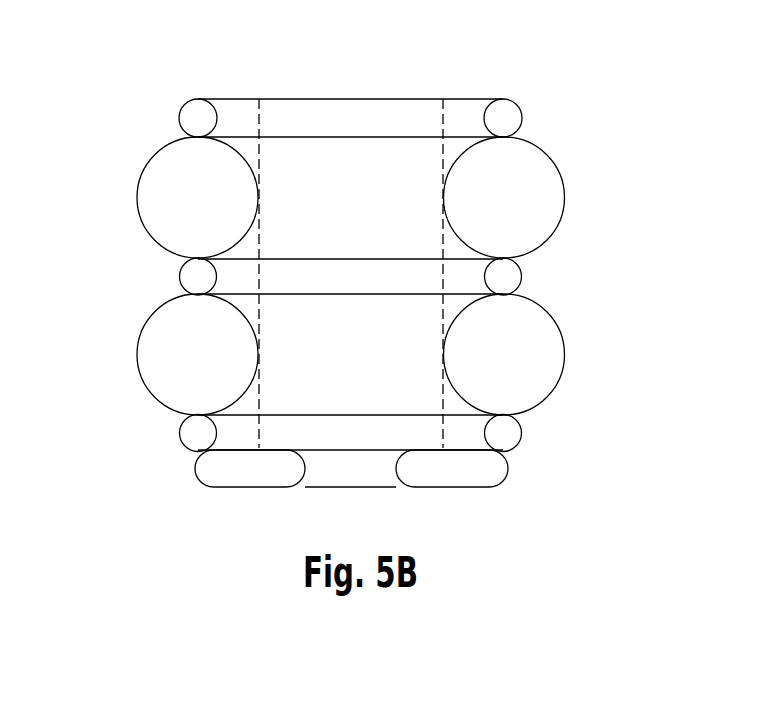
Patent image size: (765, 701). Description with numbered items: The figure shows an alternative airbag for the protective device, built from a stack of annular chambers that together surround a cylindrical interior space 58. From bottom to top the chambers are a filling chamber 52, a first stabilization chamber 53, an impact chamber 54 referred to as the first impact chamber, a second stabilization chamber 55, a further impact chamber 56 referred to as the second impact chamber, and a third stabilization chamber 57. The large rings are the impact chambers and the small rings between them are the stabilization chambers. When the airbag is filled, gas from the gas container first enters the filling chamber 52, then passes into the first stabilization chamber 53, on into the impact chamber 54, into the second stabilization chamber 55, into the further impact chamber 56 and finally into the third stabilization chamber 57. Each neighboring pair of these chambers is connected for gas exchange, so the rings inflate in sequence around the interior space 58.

The filling chamber 52 is at (215, 468).
The first stabilization chamber 53 is at (192, 433).
The impact chamber 54 is at (155, 357).
The second stabilization chamber 55 is at (192, 277).
The further impact chamber 56 is at (155, 198).
The third stabilization chamber 57 is at (191, 120).
The cylindrical interior space 58 is at (346, 144).